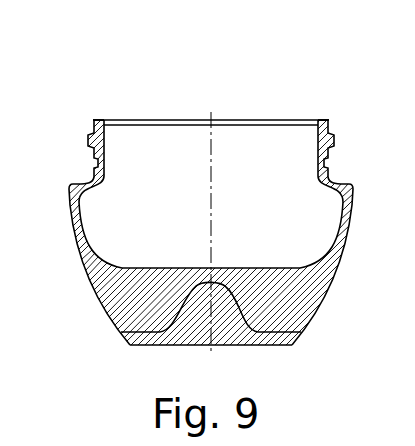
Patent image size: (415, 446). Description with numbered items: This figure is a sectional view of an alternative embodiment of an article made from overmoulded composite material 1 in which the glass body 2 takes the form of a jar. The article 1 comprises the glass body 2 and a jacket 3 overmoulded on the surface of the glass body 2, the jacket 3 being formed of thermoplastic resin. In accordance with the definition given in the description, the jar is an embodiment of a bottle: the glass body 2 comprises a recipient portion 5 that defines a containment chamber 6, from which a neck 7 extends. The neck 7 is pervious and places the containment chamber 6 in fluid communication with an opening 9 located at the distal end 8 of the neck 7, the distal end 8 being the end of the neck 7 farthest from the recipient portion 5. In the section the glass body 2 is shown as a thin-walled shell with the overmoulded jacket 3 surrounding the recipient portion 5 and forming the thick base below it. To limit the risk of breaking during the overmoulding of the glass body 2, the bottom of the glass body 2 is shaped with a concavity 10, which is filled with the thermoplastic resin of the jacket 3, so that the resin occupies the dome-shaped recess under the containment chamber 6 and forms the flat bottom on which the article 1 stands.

The article made from overmoulded composite material 1 is at (128, 82).
The glass body 2 is at (334, 276).
The jacket 3 is at (123, 343).
The recipient portion 5 is at (78, 227).
The containment chamber 6 is at (239, 227).
The neck 7 is at (323, 172).
The distal end 8 is at (326, 119).
The opening 9 is at (220, 119).
The concavity 10 is at (188, 288).